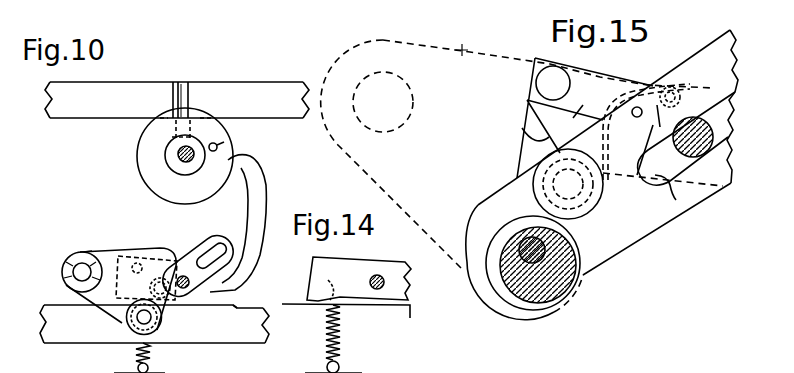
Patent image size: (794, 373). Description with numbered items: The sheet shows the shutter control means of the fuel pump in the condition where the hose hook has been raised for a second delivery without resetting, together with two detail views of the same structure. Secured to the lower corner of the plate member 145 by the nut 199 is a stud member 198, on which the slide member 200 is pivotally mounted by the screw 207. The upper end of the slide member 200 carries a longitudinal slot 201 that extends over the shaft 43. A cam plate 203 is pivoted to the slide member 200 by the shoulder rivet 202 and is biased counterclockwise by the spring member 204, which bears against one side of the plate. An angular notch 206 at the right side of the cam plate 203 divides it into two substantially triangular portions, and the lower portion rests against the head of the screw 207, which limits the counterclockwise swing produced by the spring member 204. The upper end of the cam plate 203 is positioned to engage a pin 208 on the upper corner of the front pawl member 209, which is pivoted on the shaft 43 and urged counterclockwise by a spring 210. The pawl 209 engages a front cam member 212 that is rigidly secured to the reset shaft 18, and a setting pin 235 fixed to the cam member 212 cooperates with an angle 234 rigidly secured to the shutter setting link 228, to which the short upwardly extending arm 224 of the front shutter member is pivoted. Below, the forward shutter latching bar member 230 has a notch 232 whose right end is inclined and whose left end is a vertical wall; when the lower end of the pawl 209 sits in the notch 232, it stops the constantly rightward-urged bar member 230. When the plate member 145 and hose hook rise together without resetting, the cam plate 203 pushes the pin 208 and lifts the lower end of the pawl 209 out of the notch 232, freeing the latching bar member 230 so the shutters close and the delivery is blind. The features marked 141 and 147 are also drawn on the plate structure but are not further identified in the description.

In FIG. 10, the reset shaft 18 is at (185, 163).
In FIG. 10, the shaft 43 is at (190, 283).
In FIG. 14, the shaft 43 is at (382, 275).
In FIG. 15, the shaft 43 is at (731, 114).
In FIG. 10, the bushing 141 is at (63, 275).
In FIG. 10, the plate member 145 is at (150, 248).
In FIG. 15, the plate member 145 is at (464, 50).
In FIG. 10, the plate edge 147 is at (83, 256).
In FIG. 10, the stud member 198 is at (126, 320).
In FIG. 15, the stud member 198 is at (566, 282).
In FIG. 10, the nut 199 is at (163, 324).
In FIG. 10, the slide member 200 is at (227, 237).
In FIG. 15, the slide member 200 is at (729, 31).
In FIG. 10, the longitudinal slot 201 is at (204, 245).
In FIG. 15, the longitudinal slot 201 is at (676, 183).
In FIG. 15, the shoulder rivet 202 is at (579, 213).
In FIG. 15, the cam plate 203 is at (592, 101).
In FIG. 15, the spring member 204 is at (646, 132).
In FIG. 15, the angular notch 206 is at (523, 135).
In FIG. 15, the screw 207 is at (494, 290).
In FIG. 15, the pin 208 is at (553, 83).
In FIG. 10, the front pawl member 209 is at (263, 168).
In FIG. 14, the front pawl member 209 is at (409, 279).
In FIG. 15, the front pawl member 209 is at (531, 84).
In FIG. 10, the spring 210 is at (150, 356).
In FIG. 14, the spring 210 is at (338, 341).
In FIG. 10, the front cam member 212 is at (142, 160).
In FIG. 10, the short upwardly extending arm 224 is at (177, 87).
In FIG. 10, the shutter setting link 228 is at (167, 86).
In FIG. 10, the forward shutter latching bar member 230 is at (222, 338).
In FIG. 10, the notch 232 is at (240, 322).
In FIG. 10, the angle 234 is at (191, 97).
In FIG. 10, the setting pin 235 is at (226, 142).